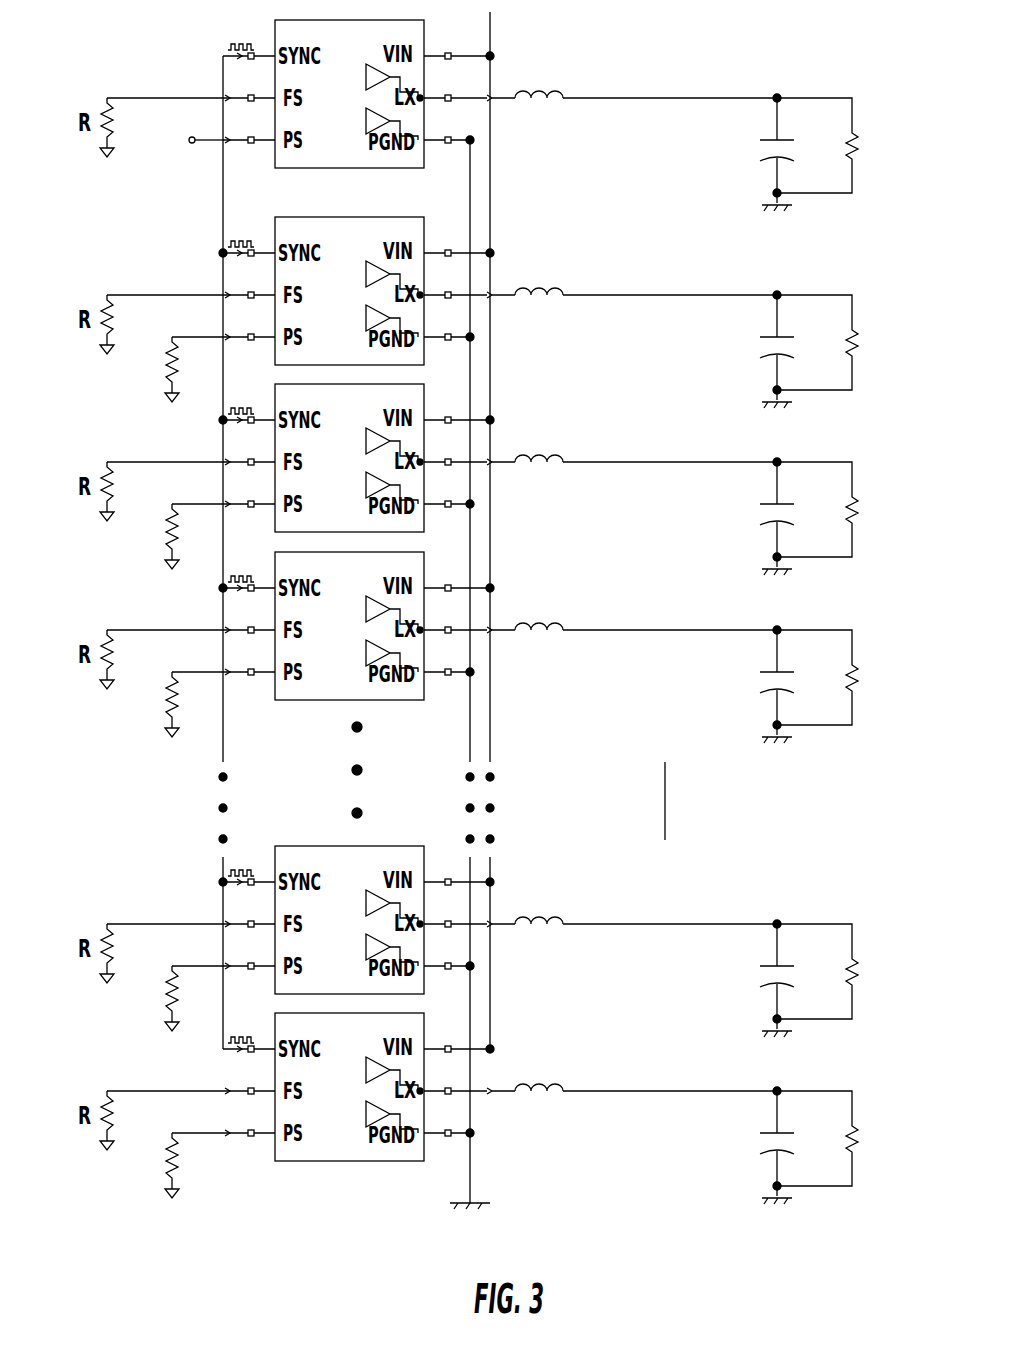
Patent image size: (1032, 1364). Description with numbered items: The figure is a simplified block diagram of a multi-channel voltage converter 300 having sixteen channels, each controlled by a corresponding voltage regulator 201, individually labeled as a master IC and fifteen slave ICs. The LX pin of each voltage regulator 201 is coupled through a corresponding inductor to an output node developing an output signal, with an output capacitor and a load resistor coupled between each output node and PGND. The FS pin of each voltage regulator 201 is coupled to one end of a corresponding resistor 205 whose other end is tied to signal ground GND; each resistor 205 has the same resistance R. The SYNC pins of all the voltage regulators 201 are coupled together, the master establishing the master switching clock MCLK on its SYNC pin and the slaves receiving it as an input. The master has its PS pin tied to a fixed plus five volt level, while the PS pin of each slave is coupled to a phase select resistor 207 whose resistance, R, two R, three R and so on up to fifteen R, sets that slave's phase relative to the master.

The multi-channel voltage converter 300 is at (647, 64).
The resistor 205 is at (108, 85).
The phase select resistor 207 is at (172, 318).
The voltage regulator 201 is at (366, 1170).